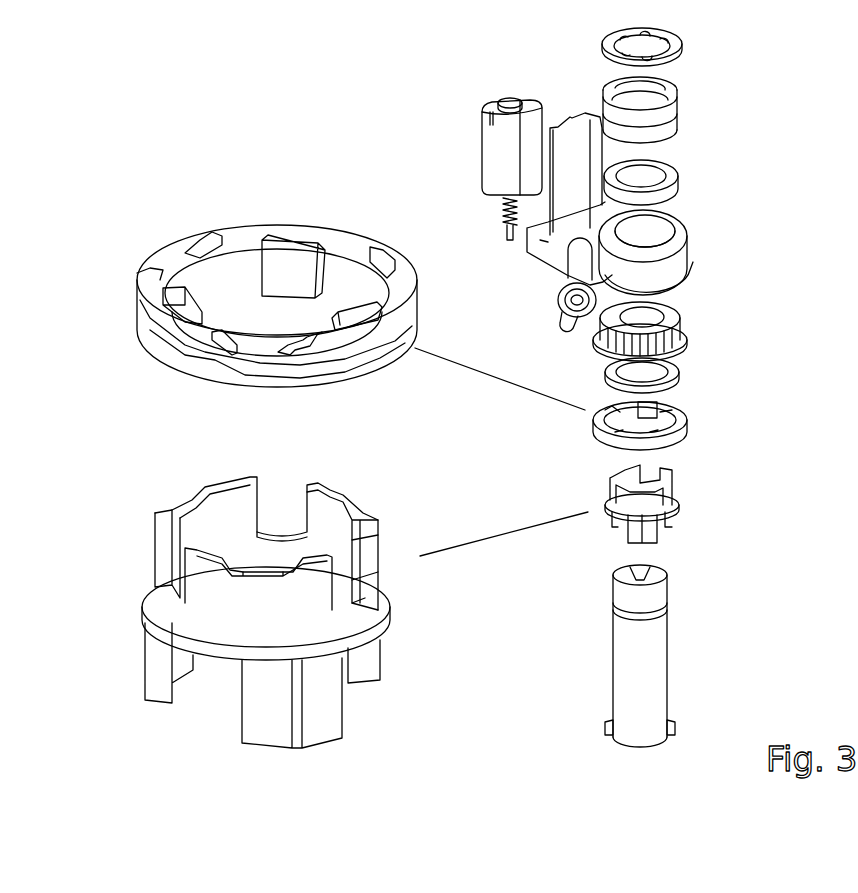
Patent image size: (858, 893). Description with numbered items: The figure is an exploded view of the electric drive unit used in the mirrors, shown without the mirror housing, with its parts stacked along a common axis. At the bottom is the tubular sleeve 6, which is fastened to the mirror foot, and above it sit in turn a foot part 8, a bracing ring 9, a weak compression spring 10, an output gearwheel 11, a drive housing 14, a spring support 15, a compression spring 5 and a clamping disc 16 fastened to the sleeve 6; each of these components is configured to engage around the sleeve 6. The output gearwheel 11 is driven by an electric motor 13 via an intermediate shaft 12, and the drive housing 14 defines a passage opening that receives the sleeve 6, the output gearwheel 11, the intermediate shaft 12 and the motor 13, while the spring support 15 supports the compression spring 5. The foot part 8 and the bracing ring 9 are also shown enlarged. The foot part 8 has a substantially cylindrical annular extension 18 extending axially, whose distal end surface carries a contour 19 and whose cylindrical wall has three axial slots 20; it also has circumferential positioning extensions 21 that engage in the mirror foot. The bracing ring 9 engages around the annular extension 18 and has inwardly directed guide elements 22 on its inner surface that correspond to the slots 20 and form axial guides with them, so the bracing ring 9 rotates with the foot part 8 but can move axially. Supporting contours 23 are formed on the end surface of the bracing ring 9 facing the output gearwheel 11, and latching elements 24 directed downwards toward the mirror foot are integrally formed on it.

The compression spring 5 is at (678, 115).
The tubular sleeve 6 is at (665, 652).
The foot part 8 is at (429, 598).
The bracing ring 9 is at (463, 299).
The weak compression spring 10 is at (678, 374).
The output gearwheel 11 is at (690, 330).
The intermediate shaft 12 is at (558, 293).
The electric motor 13 is at (498, 160).
The drive housing 14 is at (680, 254).
The spring support 15 is at (678, 183).
The clamping disc 16 is at (688, 44).
The annular extension 18 is at (208, 605).
The contour 19 is at (365, 502).
The slots 20 is at (363, 563).
The positioning extensions 21 is at (320, 692).
The guide elements 22 is at (296, 262).
The supporting contour 23 is at (297, 356).
The latching elements 24 is at (235, 363).